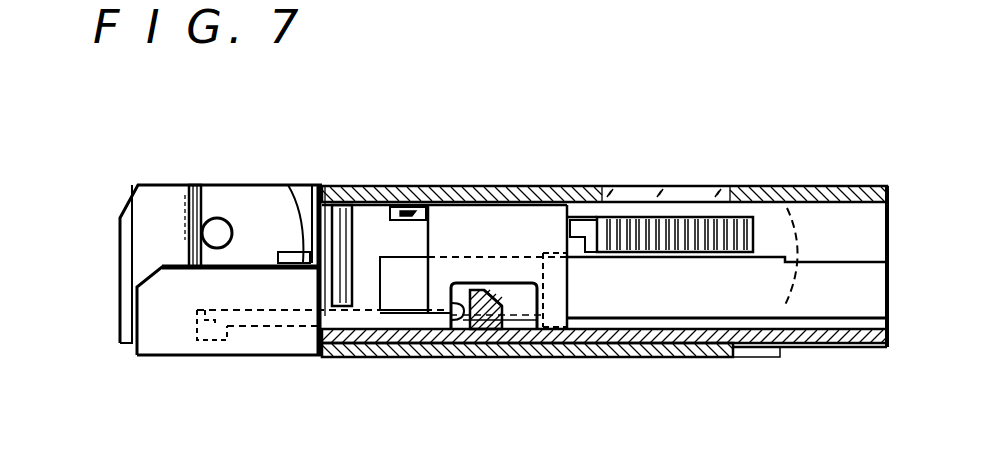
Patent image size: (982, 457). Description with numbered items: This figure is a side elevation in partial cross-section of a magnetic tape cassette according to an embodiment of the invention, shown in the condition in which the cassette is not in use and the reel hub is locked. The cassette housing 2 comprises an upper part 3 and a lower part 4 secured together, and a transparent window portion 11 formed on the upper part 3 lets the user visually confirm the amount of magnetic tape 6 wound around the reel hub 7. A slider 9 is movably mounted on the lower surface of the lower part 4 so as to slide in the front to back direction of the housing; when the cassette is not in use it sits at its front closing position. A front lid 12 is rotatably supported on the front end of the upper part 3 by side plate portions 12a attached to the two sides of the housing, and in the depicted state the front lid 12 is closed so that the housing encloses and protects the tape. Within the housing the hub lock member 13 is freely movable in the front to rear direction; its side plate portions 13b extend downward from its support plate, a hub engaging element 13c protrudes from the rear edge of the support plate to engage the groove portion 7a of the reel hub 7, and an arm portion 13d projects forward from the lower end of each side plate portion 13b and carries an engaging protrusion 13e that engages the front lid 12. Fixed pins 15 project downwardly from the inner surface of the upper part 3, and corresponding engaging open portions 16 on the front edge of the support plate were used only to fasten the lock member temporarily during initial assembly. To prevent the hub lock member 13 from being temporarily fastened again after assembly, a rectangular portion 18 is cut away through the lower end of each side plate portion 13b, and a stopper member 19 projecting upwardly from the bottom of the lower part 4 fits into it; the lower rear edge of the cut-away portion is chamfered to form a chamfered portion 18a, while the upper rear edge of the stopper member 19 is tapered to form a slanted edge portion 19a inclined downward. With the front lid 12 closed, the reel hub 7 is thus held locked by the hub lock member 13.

The cassette housing 2 is at (826, 187).
The upper half or part 3 is at (527, 187).
The lower half or part 4 is at (774, 350).
The magnetic tape 6 is at (695, 297).
The reel hub 7 is at (783, 205).
The groove portion 7a is at (692, 222).
The slidable plate member or slider 9 is at (285, 357).
The transparent window portion 11 is at (657, 190).
The front lid 12 is at (118, 232).
The side plate portion 12a is at (250, 195).
The hub locking member 13 is at (570, 288).
The side plate portion 13b is at (482, 233).
The hub engaging element 13c is at (577, 220).
The arm portion 13d is at (353, 316).
The engaging protrusion 13e is at (212, 340).
The fixed pin 15 is at (358, 215).
The engaging convex open portion 16 is at (418, 200).
The cut-away rectangular portion 18 is at (455, 330).
The chamfered portion 18a is at (540, 330).
The stopper member 19 is at (497, 297).
The slanted edge portion 19a is at (492, 297).